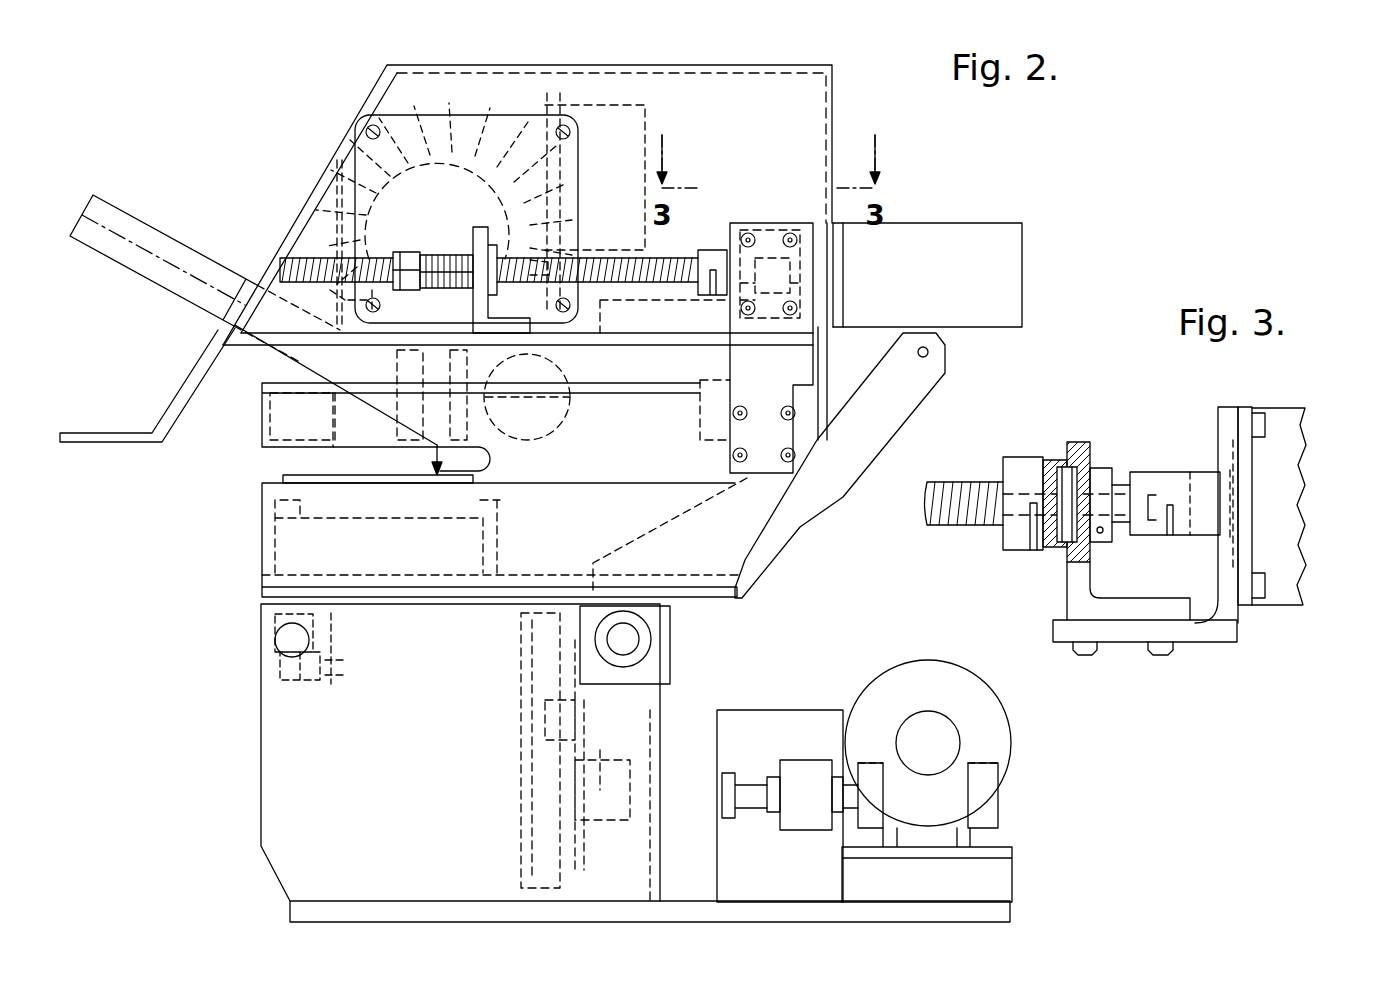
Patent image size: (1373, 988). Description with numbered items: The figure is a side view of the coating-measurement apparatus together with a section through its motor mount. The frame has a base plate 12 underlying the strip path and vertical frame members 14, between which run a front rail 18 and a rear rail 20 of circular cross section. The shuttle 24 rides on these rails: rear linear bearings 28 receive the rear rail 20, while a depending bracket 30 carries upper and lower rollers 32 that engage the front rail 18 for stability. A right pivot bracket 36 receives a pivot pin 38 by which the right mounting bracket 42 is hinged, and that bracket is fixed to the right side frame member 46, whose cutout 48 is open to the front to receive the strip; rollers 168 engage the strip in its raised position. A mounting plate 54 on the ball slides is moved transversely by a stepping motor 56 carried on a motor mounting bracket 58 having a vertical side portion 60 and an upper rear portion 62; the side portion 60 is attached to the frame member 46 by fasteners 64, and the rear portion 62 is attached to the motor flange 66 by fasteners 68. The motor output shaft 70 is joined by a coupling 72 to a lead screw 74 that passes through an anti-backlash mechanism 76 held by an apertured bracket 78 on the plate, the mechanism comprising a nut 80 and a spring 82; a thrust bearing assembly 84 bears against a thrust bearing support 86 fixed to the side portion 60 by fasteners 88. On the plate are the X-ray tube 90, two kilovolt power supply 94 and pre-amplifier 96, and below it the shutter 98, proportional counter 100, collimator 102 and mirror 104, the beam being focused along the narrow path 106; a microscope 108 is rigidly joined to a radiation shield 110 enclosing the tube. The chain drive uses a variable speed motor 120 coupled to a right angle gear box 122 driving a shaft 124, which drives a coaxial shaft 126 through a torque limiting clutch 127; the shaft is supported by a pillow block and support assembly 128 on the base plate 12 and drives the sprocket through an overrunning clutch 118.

In FIG. 2, the base plate 12 is at (400, 922).
In FIG. 2, the vertical frame members 14 is at (260, 748).
In FIG. 2, the front rail 18 is at (278, 640).
In FIG. 2, the rear rail 20 is at (640, 639).
In FIG. 2, the shuttle 24 is at (182, 518).
In FIG. 2, the rear linear bearings 28 is at (655, 670).
In FIG. 2, the depending bracket 30 is at (335, 633).
In FIG. 2, the rollers 32 is at (280, 672).
In FIG. 2, the right pivot bracket 36 is at (798, 528).
In FIG. 2, the pivot pin 38 is at (928, 352).
In FIG. 2, the right mounting bracket 42 is at (868, 380).
In FIG. 2, the right side frame member 46 is at (612, 463).
In FIG. 2, the cutout 48 is at (270, 448).
In FIG. 2, the mounting plate 54 is at (600, 340).
In FIG. 2, the stepping motor 56 is at (998, 223).
In FIG. 3, the stepping motor 56 is at (1300, 473).
In FIG. 3, the motor mounting bracket 58 is at (1255, 628).
In FIG. 2, the side portion 60 is at (818, 225).
In FIG. 3, the side portion 60 is at (1200, 640).
In FIG. 3, the upper rear portion 62 is at (1228, 407).
In FIG. 2, the fasteners 64 is at (750, 413).
In FIG. 3, the flange 66 is at (1252, 520).
In FIG. 3, the fasteners 68 is at (1310, 582).
In FIG. 3, the motor output shaft 70 is at (1185, 470).
In FIG. 2, the coupling 72 is at (830, 250).
In FIG. 2, the lead screw 74 is at (670, 275).
In FIG. 3, the lead screw 74 is at (968, 482).
In FIG. 2, the anti-backlash mechanism 76 is at (437, 242).
In FIG. 2, the apertured bracket 78 is at (497, 250).
In FIG. 2, the nut 80 is at (407, 252).
In FIG. 2, the spring 82 is at (458, 255).
In FIG. 2, the thrust bearing assembly 84 is at (710, 240).
In FIG. 3, the thrust bearing assembly 84 is at (1060, 438).
In FIG. 2, the thrust bearing support 86 is at (763, 330).
In FIG. 3, the thrust bearing support 86 is at (1068, 582).
In FIG. 2, the fasteners 88 is at (790, 232).
In FIG. 3, the fasteners 88 is at (1082, 655).
In FIG. 2, the X-ray tube 90 is at (360, 150).
In FIG. 2, the two kilovolt power supply 94 is at (628, 258).
In FIG. 2, the pre-amplifier 96 is at (645, 110).
In FIG. 2, the shutter 98 is at (520, 358).
In FIG. 2, the proportional counter 100 is at (555, 417).
In FIG. 2, the collimator 102 is at (395, 408).
In FIG. 2, the mirror 104 is at (490, 455).
In FIG. 2, the radiation beam path 106 is at (492, 470).
In FIG. 2, the microscope 108 is at (185, 228).
In FIG. 2, the radiation shield 110 is at (170, 382).
In FIG. 2, the overrunning clutch 118 is at (606, 760).
In FIG. 2, the variable speed motor 120 is at (928, 682).
In FIG. 2, the right angle gear box 122 is at (1000, 808).
In FIG. 2, the shaft 124 is at (835, 830).
In FIG. 2, the coaxial shaft 126 is at (750, 782).
In FIG. 2, the torque limiting clutch 127 is at (810, 760).
In FIG. 2, the pillow block and support assembly 128 is at (712, 868).
In FIG. 2, the rollers 168 is at (338, 470).